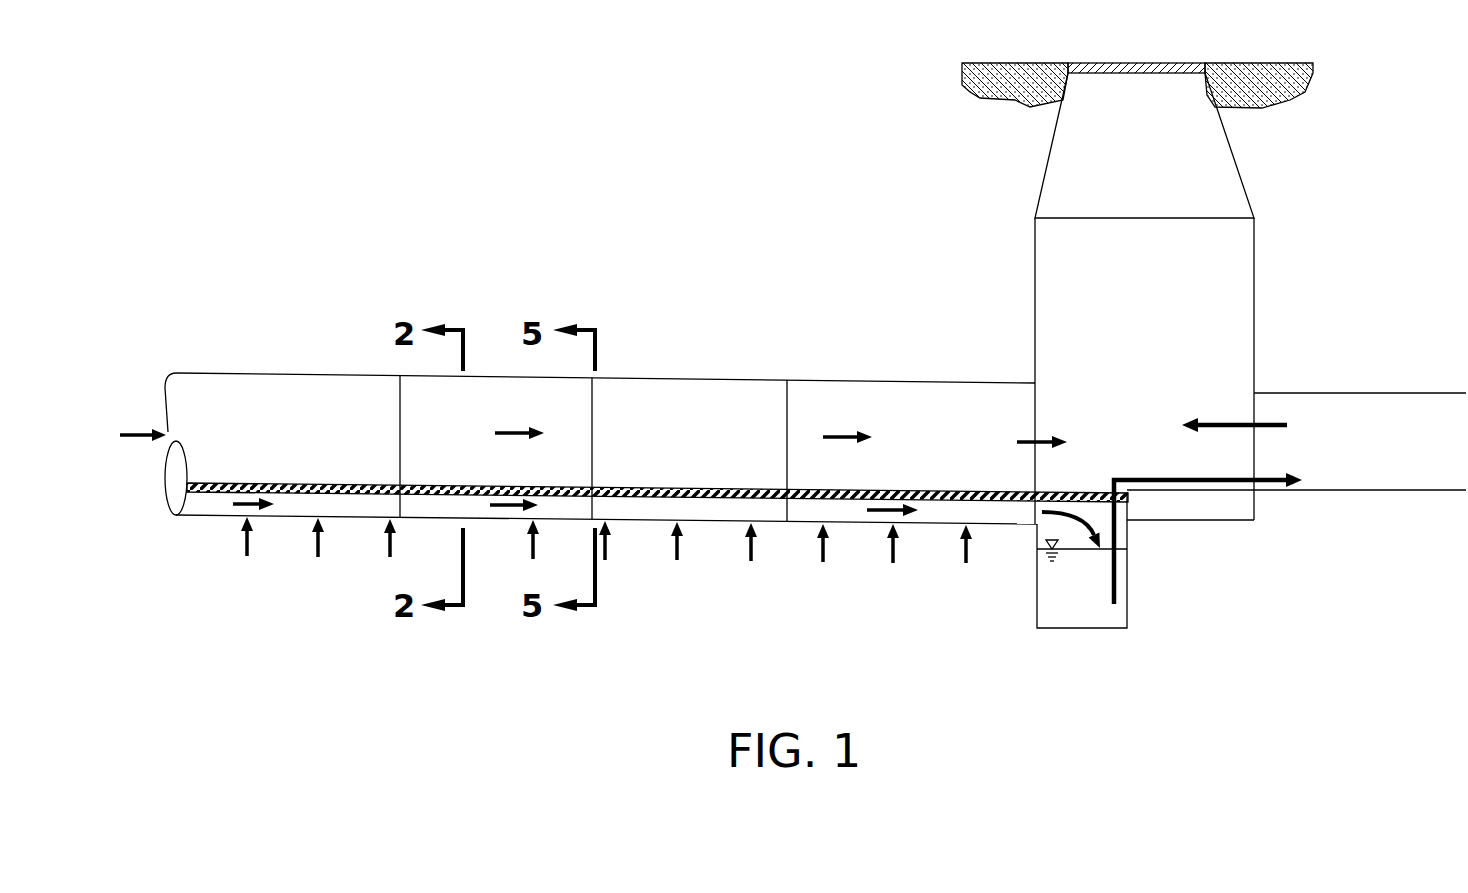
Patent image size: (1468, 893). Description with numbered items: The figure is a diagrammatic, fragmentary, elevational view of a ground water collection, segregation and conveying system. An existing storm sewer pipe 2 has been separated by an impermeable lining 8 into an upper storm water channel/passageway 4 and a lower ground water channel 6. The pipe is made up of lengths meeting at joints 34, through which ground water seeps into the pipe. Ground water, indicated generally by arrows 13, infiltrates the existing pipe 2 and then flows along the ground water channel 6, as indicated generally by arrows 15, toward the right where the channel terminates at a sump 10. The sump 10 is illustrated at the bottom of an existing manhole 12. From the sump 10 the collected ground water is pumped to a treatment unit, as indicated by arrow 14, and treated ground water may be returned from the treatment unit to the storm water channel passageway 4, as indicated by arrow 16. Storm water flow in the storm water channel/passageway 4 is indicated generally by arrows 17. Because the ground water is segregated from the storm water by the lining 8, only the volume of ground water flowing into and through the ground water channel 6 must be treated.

The existing storm sewer pipe 2 is at (262, 374).
The storm water channel/passageway 4 is at (508, 397).
The ground water channel 6 is at (580, 512).
The impermeable lining 8 is at (623, 486).
The sump 10 is at (1048, 586).
The existing manhole 12 is at (1254, 324).
The arrows indicating ground water infiltration 13 is at (323, 533).
The arrow indicating pumping to treatment unit 14 is at (1298, 483).
The arrows indicating ground water flow 15 is at (273, 493).
The arrow indicating return of treated ground water 16 is at (1193, 422).
The arrows indicating storm water flow 17 is at (531, 428).
The joint 34 is at (399, 416).